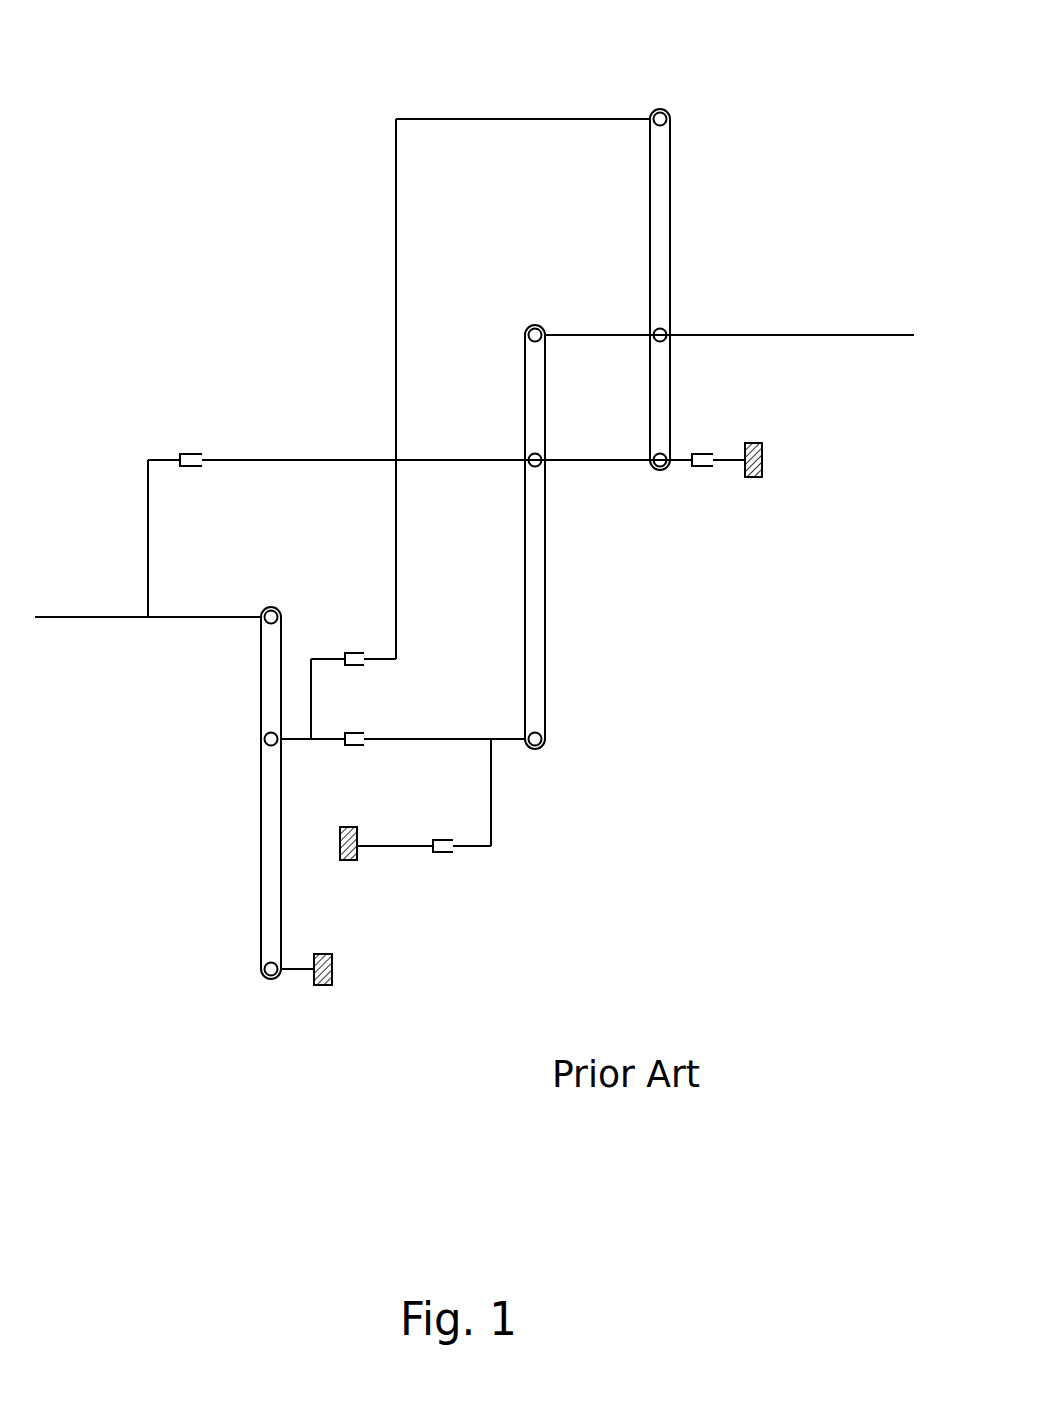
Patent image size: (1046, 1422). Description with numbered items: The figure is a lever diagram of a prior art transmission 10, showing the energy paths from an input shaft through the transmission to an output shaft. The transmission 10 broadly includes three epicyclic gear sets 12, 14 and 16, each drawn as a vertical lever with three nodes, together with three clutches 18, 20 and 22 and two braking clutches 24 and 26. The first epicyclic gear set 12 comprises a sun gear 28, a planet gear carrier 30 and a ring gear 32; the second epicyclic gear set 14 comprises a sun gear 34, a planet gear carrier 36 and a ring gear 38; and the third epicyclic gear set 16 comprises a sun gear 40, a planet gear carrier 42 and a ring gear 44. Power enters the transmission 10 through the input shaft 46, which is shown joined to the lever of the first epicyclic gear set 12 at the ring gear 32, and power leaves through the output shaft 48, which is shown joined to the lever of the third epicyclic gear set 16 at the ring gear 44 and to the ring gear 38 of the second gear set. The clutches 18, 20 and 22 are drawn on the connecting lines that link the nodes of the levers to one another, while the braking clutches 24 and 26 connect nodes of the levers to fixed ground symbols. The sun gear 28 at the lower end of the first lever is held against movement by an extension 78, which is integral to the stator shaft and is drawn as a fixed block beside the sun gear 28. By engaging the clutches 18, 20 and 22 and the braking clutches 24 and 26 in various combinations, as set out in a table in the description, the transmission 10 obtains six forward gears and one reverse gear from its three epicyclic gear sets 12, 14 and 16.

The transmission 10 is at (165, 110).
The epicyclic gear set 12 is at (222, 888).
The epicyclic gear set 14 is at (583, 645).
The epicyclic gear set 16 is at (705, 220).
The clutch 18 is at (352, 652).
The clutch 20 is at (352, 746).
The clutch 22 is at (191, 452).
The braking clutch 24 is at (445, 853).
The braking clutch 26 is at (703, 467).
The sun gear 28 is at (270, 977).
The planet gear carrier 30 is at (265, 741).
The ring gear 32 is at (270, 608).
The sun gear 34 is at (540, 748).
The planet gear carrier 36 is at (540, 467).
The ring gear 38 is at (532, 329).
The sun gear 40 is at (667, 112).
The planet gear carrier 42 is at (662, 470).
The ring gear 44 is at (666, 331).
The input shaft 46 is at (78, 619).
The output shaft 48 is at (823, 335).
The extension 78 is at (333, 982).